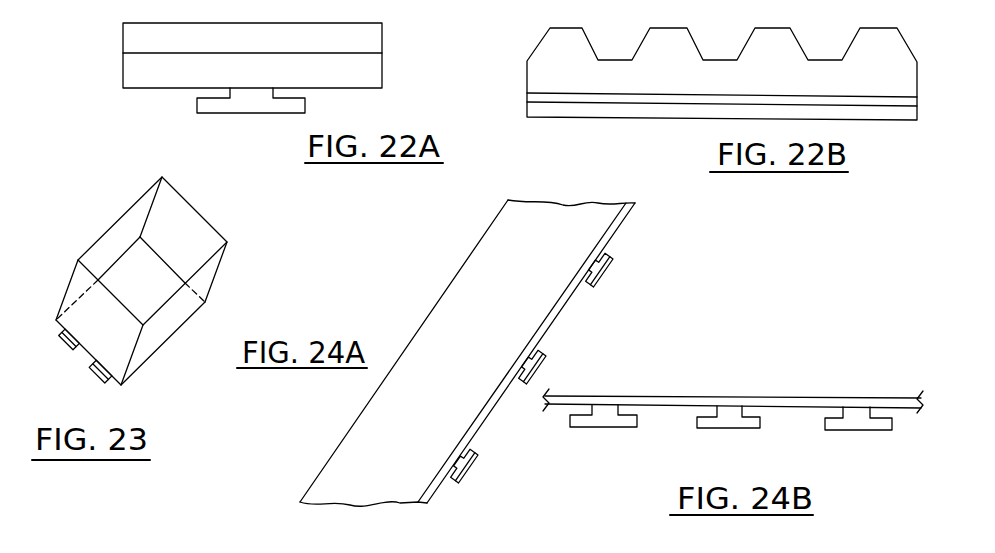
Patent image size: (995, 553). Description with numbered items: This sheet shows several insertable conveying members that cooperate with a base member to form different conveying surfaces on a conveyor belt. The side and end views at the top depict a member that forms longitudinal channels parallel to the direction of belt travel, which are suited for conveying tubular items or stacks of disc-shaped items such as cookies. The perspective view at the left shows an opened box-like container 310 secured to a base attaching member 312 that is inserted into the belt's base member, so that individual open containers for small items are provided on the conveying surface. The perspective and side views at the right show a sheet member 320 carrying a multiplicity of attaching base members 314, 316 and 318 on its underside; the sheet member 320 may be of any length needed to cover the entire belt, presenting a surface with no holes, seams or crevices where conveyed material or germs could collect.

In FIG. 23, the opened box-like container 310 is at (187, 204).
In FIG. 23, the base attaching member 312 is at (84, 364).
In FIG. 24A, the attaching base member 314 is at (474, 458).
In FIG. 24B, the attaching base member 314 is at (600, 422).
In FIG. 24A, the attaching base member 316 is at (540, 358).
In FIG. 24B, the attaching base member 316 is at (715, 422).
In FIG. 24A, the attaching base member 318 is at (608, 267).
In FIG. 24B, the attaching base member 318 is at (858, 425).
In FIG. 24A, the sheet member 320 is at (480, 242).
In FIG. 24B, the sheet member 320 is at (808, 395).